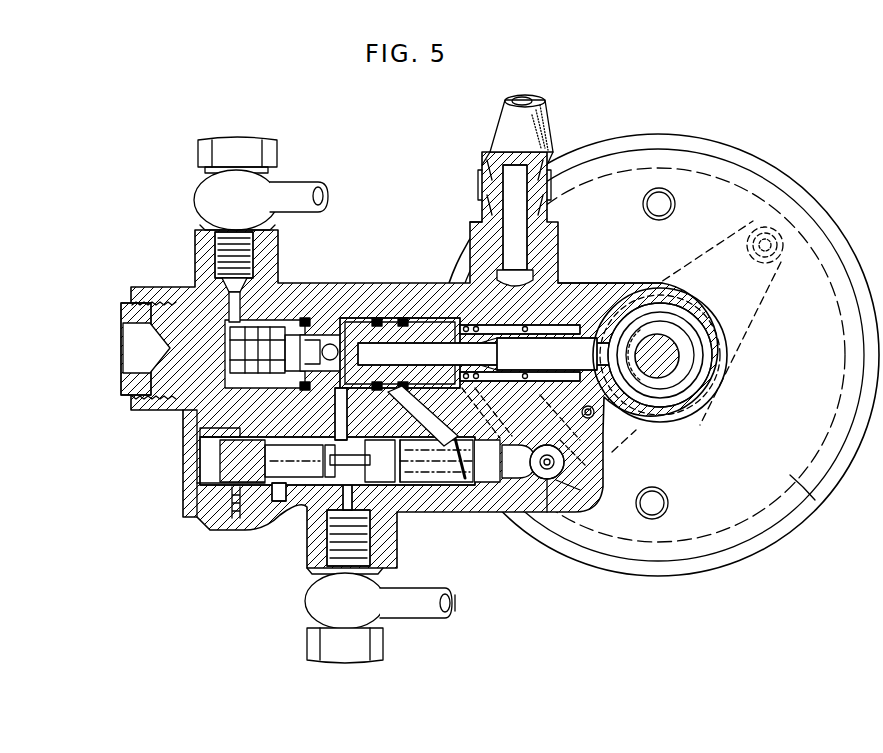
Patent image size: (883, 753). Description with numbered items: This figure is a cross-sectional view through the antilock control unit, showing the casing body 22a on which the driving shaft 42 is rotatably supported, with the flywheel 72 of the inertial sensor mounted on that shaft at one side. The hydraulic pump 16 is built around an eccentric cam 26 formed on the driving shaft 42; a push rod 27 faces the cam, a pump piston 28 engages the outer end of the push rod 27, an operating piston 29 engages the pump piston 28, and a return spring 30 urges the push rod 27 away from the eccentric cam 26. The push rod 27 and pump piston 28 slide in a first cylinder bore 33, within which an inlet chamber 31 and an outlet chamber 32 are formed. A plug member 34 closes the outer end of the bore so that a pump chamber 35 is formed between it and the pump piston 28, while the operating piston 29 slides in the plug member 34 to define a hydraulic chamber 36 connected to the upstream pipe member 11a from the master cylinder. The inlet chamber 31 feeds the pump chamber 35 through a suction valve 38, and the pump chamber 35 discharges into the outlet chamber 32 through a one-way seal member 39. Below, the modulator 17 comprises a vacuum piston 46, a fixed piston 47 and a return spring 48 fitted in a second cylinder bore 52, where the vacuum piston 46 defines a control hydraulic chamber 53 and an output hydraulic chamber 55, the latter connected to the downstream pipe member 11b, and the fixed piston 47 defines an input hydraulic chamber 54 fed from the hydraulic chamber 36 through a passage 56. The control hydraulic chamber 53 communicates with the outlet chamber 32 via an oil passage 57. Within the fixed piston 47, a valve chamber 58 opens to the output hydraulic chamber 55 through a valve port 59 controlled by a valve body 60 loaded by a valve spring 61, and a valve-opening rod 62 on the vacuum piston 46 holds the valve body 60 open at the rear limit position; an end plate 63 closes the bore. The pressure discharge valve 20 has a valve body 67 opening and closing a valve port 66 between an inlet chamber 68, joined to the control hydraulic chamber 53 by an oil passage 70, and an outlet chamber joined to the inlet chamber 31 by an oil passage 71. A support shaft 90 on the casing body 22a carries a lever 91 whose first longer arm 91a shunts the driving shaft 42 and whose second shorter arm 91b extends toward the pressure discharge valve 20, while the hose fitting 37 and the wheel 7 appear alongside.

The wheel 7 is at (625, 120).
The flywheel 72 is at (803, 488).
The lever 91 is at (780, 258).
The first longer arm 91a is at (755, 312).
The second shorter arm 91b is at (636, 432).
The plug member 34 is at (136, 316).
The hydraulic chamber 36 is at (240, 325).
The operating piston 29 is at (275, 345).
The suction valve 38 is at (335, 330).
The one-way seal member 39 is at (352, 325).
The first cylinder bore 33 is at (318, 318).
The pump chamber 35 is at (288, 318).
The hydraulic pump 16 is at (428, 338).
The outlet chamber 32 is at (380, 318).
The pump piston 28 is at (405, 318).
The return spring 30 is at (487, 356).
The inlet chamber 31 is at (515, 330).
The push rod 27 is at (585, 295).
The casing body 22a is at (607, 292).
The eccentric cam 26 is at (690, 368).
The driving shaft 42 is at (672, 347).
The hose connection 37 is at (503, 126).
The section line 11a is at (392, 195).
The modulator 17 is at (312, 506).
The section line 11b is at (455, 603).
The return spring 48 is at (432, 485).
The valve spring 61 is at (262, 452).
The valve body 60 is at (305, 440).
The valve port 59 is at (340, 440).
The valve-opening rod 62 is at (362, 452).
The passage 56 is at (225, 430).
The input hydraulic chamber 54 is at (200, 442).
The end plate 63 is at (195, 480).
The valve chamber 58 is at (280, 487).
The fixed piston 47 is at (247, 487).
The output hydraulic chamber 55 is at (372, 485).
The vacuum piston 46 is at (408, 485).
The second cylinder bore 52 is at (462, 485).
The control hydraulic chamber 53 is at (488, 485).
The oil passage 70 is at (512, 478).
The pressure discharge valve 20 is at (545, 480).
The oil passage 57 is at (412, 402).
The oil passage 71 is at (470, 388).
The support shaft 90 is at (575, 402).
The valve body 67 is at (570, 455).
The inlet chamber 68 is at (565, 478).
The valve port 66 is at (560, 478).